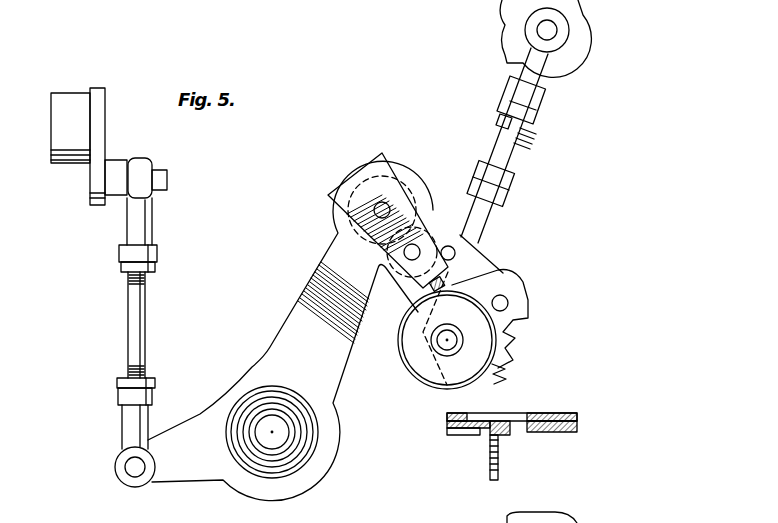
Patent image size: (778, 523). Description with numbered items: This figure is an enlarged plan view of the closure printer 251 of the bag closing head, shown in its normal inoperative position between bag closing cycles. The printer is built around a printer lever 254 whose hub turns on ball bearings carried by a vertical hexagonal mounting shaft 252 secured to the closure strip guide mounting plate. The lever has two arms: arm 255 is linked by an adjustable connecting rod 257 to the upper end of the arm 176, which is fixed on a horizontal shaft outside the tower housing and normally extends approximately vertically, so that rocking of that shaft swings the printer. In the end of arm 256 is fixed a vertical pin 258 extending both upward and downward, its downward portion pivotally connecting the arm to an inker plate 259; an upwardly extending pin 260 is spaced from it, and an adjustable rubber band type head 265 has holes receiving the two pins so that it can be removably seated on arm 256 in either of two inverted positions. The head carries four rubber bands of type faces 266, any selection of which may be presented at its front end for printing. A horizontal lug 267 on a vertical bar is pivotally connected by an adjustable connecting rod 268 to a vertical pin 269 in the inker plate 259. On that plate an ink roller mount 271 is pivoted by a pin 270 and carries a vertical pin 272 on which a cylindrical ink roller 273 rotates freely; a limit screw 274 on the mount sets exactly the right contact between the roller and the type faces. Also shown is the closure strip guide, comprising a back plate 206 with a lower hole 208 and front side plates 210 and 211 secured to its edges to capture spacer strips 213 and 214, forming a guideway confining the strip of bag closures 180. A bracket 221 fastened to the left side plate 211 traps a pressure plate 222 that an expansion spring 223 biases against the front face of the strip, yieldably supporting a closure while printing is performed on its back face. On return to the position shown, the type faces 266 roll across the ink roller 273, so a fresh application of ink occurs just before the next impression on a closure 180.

The arm 176 is at (100, 145).
The adjustable connecting rod 257 is at (136, 349).
The arm 255 is at (165, 437).
The printer lever 254 is at (262, 493).
The hexagonal mounting shaft 252 is at (280, 437).
The arm 256 is at (297, 323).
The adjustable rubber band type head 265 is at (336, 218).
The vertical pin 258 is at (383, 205).
The upwardly extending pin 260 is at (410, 258).
The vertical pin 269 is at (448, 247).
The vertical pin 272 is at (440, 341).
The cylindrical ink roller 273 is at (421, 381).
The inker plate 259 is at (470, 247).
The closure printer 251 is at (521, 258).
The type faces 266 is at (500, 281).
The pin 270 is at (509, 303).
The ink roller mount 271 is at (520, 319).
The limit screw 274 is at (506, 377).
The horizontal lug 267 is at (578, 40).
The adjustable connecting rod 268 is at (500, 151).
The lower hole 208 is at (518, 414).
The bag closures 180 is at (500, 418).
The back plate 206 is at (578, 417).
The spacer strip 213 is at (580, 424).
The front side plate 210 is at (578, 429).
The spacer strip 214 is at (452, 422).
The left side plate 211 is at (450, 429).
The pressure plate 222 is at (508, 429).
The bracket 221 is at (480, 438).
The expansion spring 223 is at (499, 450).